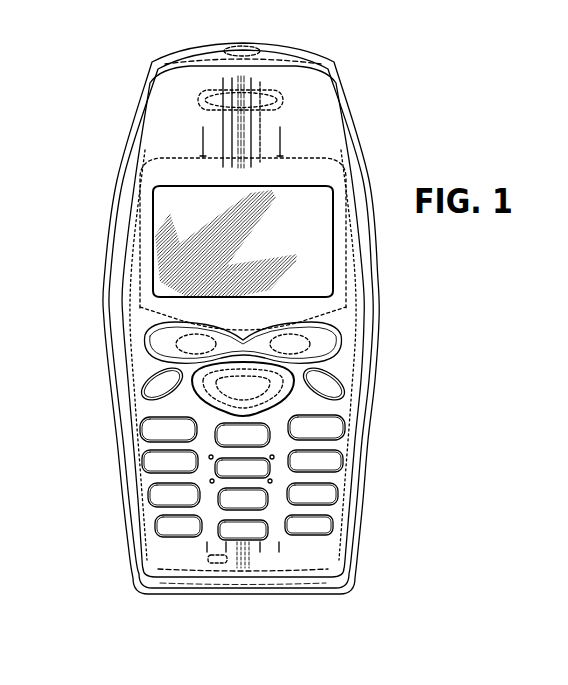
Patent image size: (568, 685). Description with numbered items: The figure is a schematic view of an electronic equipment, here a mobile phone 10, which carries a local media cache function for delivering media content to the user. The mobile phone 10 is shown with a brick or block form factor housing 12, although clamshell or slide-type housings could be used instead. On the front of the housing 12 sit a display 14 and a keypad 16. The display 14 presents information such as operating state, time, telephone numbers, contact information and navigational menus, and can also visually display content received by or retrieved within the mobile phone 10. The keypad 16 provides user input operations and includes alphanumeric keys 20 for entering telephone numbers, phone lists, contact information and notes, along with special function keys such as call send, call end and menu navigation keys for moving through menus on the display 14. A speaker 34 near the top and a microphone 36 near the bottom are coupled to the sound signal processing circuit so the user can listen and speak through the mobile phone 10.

The mobile phone 10 is at (88, 60).
The housing 12 is at (124, 130).
The display 14 is at (163, 210).
The keypad 16 is at (142, 480).
The alphanumeric keys 20 is at (210, 378).
The speaker 34 is at (220, 106).
The microphone 36 is at (218, 565).